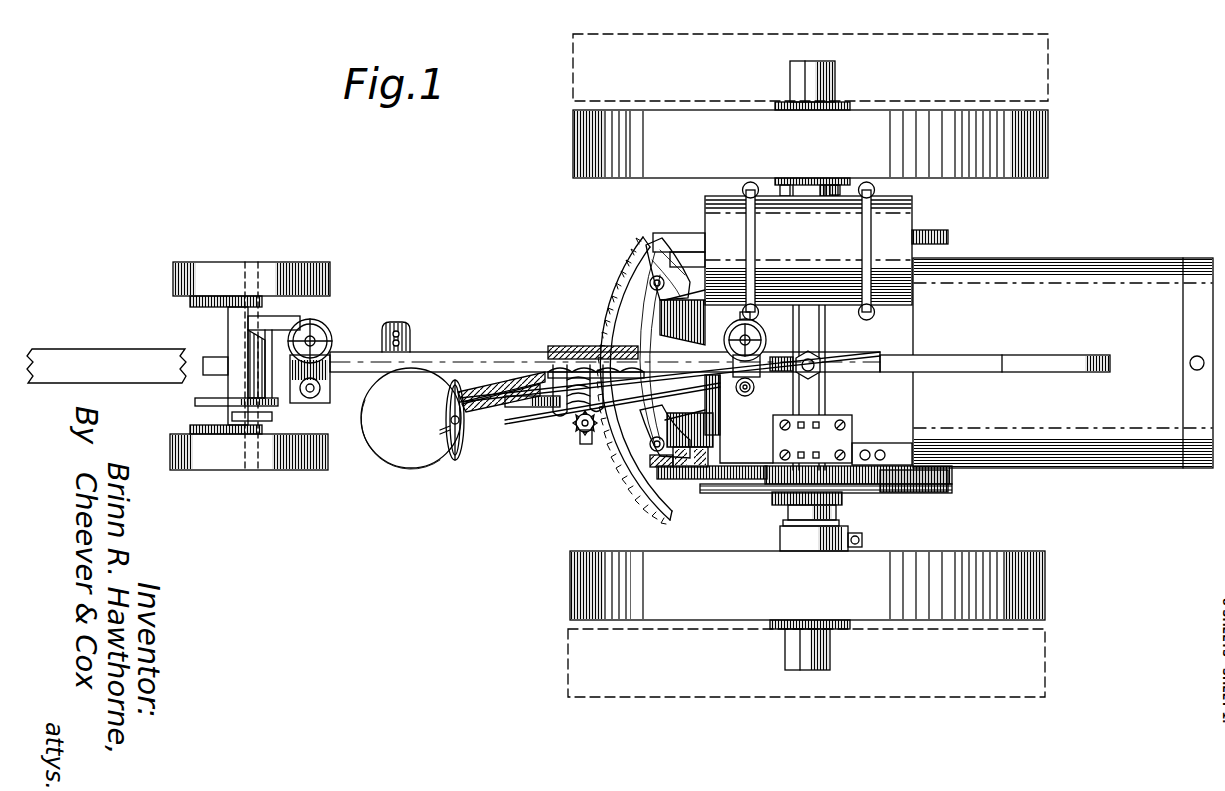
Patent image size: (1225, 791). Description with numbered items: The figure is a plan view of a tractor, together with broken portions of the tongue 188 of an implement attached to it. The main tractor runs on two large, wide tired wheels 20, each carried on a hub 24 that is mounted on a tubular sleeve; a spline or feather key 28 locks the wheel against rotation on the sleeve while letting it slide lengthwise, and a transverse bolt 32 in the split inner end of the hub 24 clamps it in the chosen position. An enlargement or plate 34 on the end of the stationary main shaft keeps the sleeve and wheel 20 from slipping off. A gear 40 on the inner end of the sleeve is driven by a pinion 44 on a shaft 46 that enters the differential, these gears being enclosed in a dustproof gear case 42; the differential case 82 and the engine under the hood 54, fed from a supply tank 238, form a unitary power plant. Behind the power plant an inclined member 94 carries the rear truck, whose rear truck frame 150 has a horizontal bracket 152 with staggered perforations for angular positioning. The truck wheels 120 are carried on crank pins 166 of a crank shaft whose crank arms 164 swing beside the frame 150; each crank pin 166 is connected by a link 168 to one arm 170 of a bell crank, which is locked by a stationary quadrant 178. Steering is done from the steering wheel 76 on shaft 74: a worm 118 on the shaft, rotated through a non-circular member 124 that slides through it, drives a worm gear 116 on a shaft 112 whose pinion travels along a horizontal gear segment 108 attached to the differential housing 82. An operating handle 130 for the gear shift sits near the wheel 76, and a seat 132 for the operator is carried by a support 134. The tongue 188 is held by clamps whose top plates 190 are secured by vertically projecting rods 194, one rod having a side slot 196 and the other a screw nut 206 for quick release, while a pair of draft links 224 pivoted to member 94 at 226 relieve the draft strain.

The wheels 20 is at (1048, 150).
The hub 24 is at (795, 540).
The spline or feather key 28 is at (812, 88).
The transverse bolt 32 is at (832, 184).
The enlargement or plate 34 is at (822, 66).
The gear 40 is at (745, 482).
The gear case 42 is at (687, 252).
The pinion 44 is at (655, 470).
The shaft 46 is at (625, 482).
The hood 54 is at (1063, 363).
The shaft 74 is at (492, 410).
The steering wheel 76 is at (456, 445).
The differential case 82 is at (652, 333).
The inclined member 94 is at (432, 358).
The horizontal gear segment 108 is at (640, 252).
The shaft 112 is at (586, 445).
The worm gear 116 is at (582, 433).
The worm 118 is at (560, 364).
The wheel mechanism 120 is at (197, 262).
The non-circular member 124 is at (548, 425).
The operating handle 130 is at (518, 408).
The seat 132 is at (411, 418).
The support 134 is at (450, 436).
The rear truck frame 150 is at (212, 360).
The horizontal bracket 152 is at (399, 322).
The crank arms 164 is at (326, 323).
The crank pins 166 is at (263, 270).
The link 168 is at (228, 434).
The arm 170 is at (215, 418).
The stationary quadrant 178 is at (196, 404).
The tongue 188 is at (95, 357).
The top plates 190 is at (762, 376).
The vertically projecting rods 194 is at (727, 339).
The side slot 196 is at (768, 345).
The screw nut 206 is at (745, 397).
The draft links 224 is at (482, 352).
The pivot 226 is at (560, 362).
The supply tank 238 is at (826, 251).